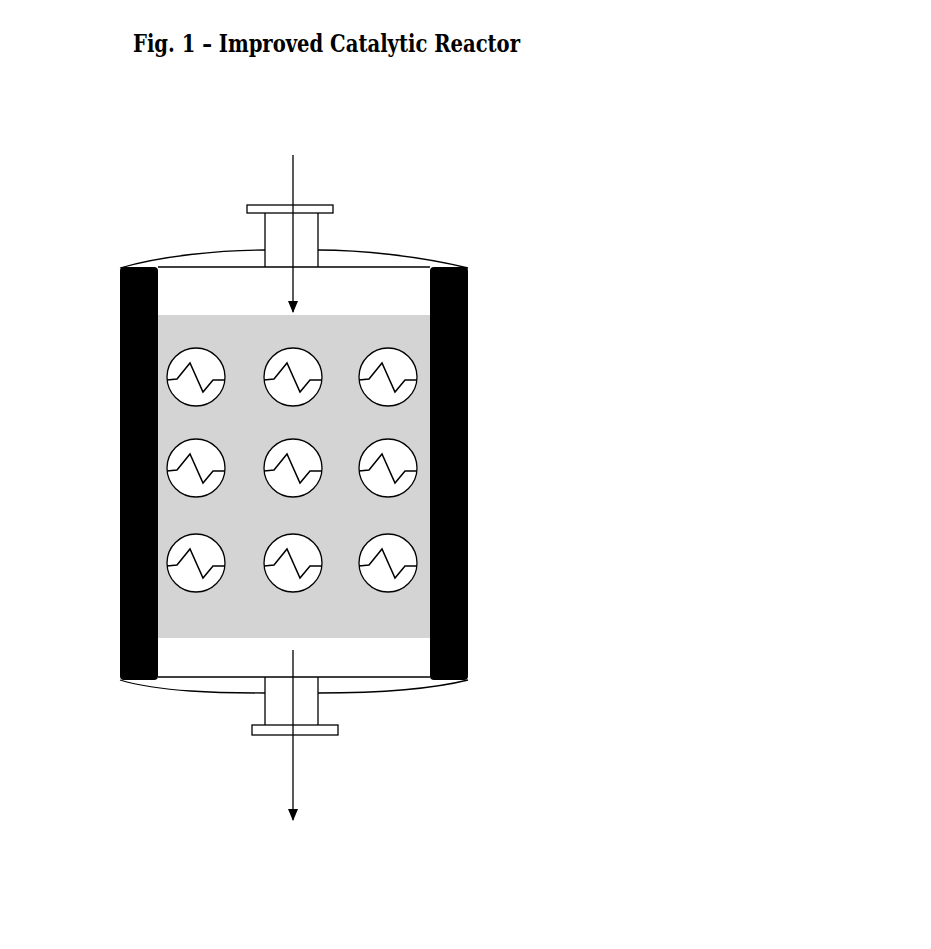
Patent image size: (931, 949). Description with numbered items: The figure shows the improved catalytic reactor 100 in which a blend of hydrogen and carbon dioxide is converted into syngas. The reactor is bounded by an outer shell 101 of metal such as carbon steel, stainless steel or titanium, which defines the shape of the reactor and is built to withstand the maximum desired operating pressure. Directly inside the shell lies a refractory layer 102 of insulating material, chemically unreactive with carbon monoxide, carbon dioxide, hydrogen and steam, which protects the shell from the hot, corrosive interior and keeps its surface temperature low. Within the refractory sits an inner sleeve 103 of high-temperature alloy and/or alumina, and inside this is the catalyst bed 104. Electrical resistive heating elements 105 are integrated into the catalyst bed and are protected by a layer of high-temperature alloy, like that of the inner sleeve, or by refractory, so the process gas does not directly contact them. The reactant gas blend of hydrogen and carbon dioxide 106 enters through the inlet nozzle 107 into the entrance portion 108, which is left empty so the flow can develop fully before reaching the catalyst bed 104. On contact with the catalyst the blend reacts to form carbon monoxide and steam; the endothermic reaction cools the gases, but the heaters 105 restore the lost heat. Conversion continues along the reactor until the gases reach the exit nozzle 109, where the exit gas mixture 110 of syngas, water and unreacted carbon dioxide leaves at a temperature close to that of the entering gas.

The improved catalytic reactor 100 is at (83, 225).
The outer shell 101 is at (678, 350).
The refractory layer 102 is at (678, 385).
The inner sleeve 103 is at (678, 420).
The catalyst bed 104 is at (678, 513).
The electrical resistive heating elements 105 is at (678, 568).
The reactant gas blend of hydrogen and carbon dioxide 106 is at (294, 121).
The inlet nozzle 107 is at (523, 222).
The entrance portion 108 is at (678, 295).
The exit nozzle 109 is at (602, 713).
The exit gas mixture 110 is at (279, 869).